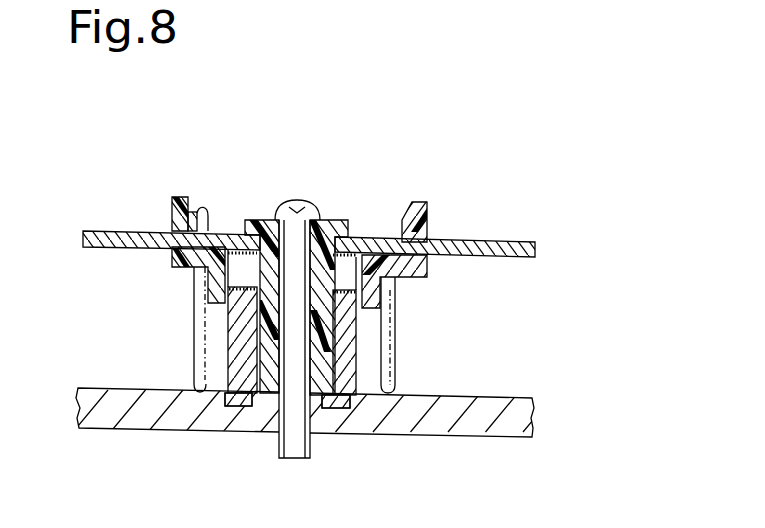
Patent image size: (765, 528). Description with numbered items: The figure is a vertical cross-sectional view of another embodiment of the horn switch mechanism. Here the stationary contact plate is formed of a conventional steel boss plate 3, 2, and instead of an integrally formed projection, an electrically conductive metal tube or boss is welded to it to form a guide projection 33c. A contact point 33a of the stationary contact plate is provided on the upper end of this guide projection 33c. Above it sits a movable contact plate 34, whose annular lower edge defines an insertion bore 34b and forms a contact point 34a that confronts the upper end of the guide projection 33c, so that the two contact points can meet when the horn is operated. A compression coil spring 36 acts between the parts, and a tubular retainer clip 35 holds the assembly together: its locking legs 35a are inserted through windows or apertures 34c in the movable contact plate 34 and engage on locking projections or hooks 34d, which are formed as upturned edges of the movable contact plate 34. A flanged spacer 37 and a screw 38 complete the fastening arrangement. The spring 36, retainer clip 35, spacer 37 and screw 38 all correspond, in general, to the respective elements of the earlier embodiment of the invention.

The base plate (housing wall) 3 is at (354, 412).
The housing 2 is at (536, 411).
The contact point 33a is at (236, 291).
The guide projection 33c is at (237, 381).
The movable contact plate 34 is at (498, 242).
The contact point 34a is at (215, 233).
The insertion bore 34b is at (328, 238).
The windows or apertures 34c is at (166, 243).
The locking projections or hooks 34d is at (200, 210).
The tubular retainer clip 35 is at (421, 268).
The locking legs 35a is at (171, 199).
The compression coil spring 36 is at (396, 363).
The flanged spacer 37 is at (252, 219).
The screw 38 is at (300, 200).